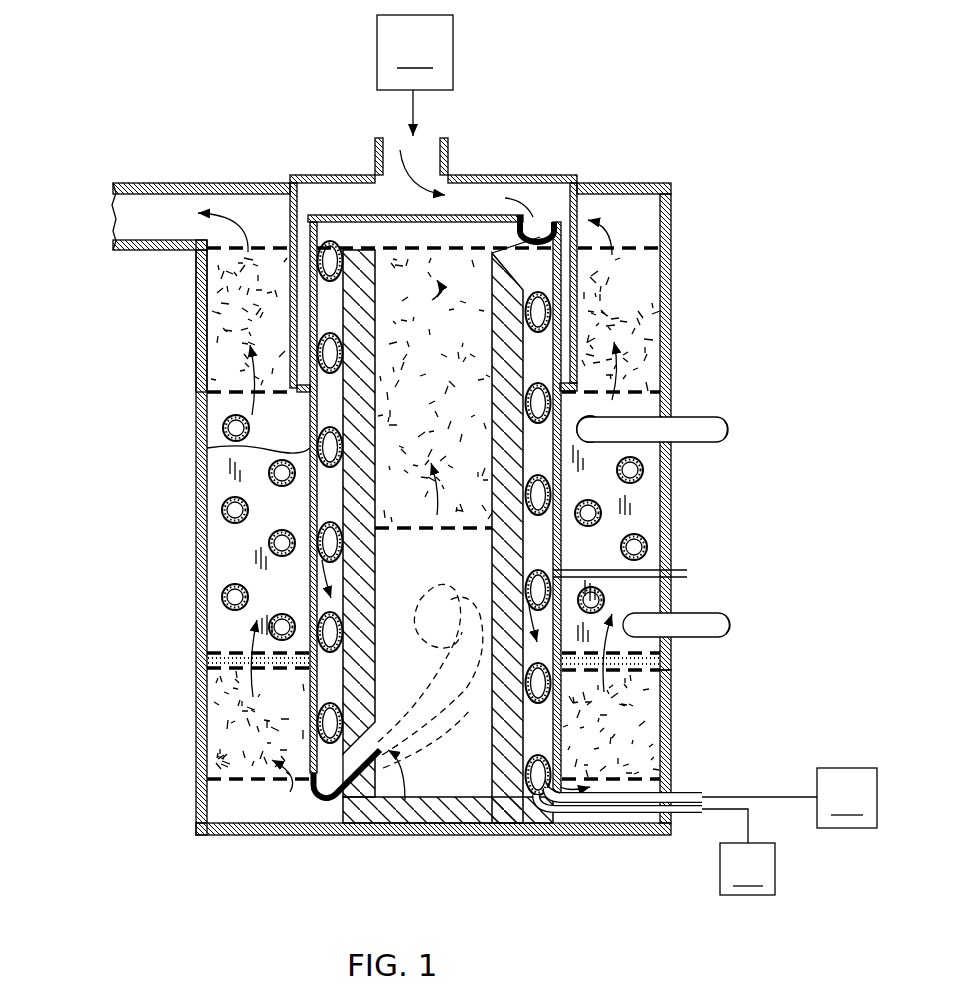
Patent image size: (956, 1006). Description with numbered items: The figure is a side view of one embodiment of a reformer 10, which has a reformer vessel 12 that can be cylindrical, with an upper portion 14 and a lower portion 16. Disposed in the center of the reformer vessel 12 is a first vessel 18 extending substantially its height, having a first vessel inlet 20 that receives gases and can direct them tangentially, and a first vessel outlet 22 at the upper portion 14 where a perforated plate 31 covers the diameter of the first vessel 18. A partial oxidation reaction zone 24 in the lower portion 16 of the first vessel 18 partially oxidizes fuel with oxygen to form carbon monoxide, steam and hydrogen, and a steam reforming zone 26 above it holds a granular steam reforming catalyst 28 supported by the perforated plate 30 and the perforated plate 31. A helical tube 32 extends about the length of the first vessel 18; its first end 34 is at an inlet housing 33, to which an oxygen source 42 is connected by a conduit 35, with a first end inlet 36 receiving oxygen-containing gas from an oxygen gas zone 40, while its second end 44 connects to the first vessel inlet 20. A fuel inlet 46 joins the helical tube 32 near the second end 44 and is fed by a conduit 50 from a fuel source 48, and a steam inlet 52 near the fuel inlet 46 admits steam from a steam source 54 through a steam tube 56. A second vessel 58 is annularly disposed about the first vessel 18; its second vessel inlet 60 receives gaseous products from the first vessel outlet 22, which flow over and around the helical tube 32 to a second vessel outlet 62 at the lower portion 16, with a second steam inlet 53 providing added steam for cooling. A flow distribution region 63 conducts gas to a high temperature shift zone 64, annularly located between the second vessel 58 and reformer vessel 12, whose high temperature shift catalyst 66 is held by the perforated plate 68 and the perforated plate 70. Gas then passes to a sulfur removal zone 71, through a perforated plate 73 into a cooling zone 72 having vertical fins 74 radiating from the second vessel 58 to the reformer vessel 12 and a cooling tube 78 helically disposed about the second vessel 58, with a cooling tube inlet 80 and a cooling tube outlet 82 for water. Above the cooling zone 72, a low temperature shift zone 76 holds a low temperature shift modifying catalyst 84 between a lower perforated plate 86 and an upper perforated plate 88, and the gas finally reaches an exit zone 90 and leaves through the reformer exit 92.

The reformer 10 is at (160, 95).
The reformer vessel 12 is at (198, 722).
The upper portion 14 is at (607, 183).
The lower portion 16 is at (200, 836).
The first vessel 18 is at (312, 406).
The first vessel inlet 20 is at (405, 800).
The first vessel outlet 22 is at (392, 262).
The partial oxidation reaction zone 24 is at (482, 775).
The steam reforming zone 26 is at (447, 240).
The steam reforming catalyst 28 is at (400, 467).
The perforated plate 30 is at (455, 530).
The perforated plate 31 is at (465, 246).
The helical tube 32 is at (541, 290).
The inlet housing 33 is at (385, 138).
The first end 34 is at (546, 198).
The conduit 35 is at (415, 105).
The first end inlet 36 is at (538, 226).
The oxygen gas zone 40 is at (505, 190).
The oxygen source 42 is at (415, 52).
The second end 44 is at (332, 805).
The fuel inlet 46 is at (547, 797).
The fuel source 48 is at (847, 798).
The conduit 50 is at (690, 793).
The steam inlet 52 is at (540, 800).
The second steam inlet 53 is at (675, 570).
The steam source 54 is at (747, 869).
The steam tube 56 is at (686, 814).
The second vessel 58 is at (207, 448).
The second vessel inlet 60 is at (300, 235).
The second vessel outlet 62 is at (318, 790).
The flow distribution region 63 is at (250, 805).
The high temperature shift zone 64 is at (672, 748).
The high temperature shift catalyst 66 is at (640, 705).
The perforated plate 68 is at (235, 788).
The perforated plate 70 is at (668, 665).
The sulfur removal zone 71 is at (215, 660).
The cooling zone 72 is at (207, 512).
The perforated plate 73 is at (237, 655).
The vertical fins 74 is at (232, 570).
The low temperature shift zone 76 is at (207, 290).
The cooling tube 78 is at (645, 470).
The cooling tube inlet 80 is at (700, 614).
The cooling tube outlet 82 is at (700, 418).
The low temperature shift modifying catalyst 84 is at (240, 318).
The lower perforated plate 86 is at (600, 360).
The upper perforated plate 88 is at (668, 232).
The exit zone 90 is at (235, 205).
The reformer exit 92 is at (113, 200).